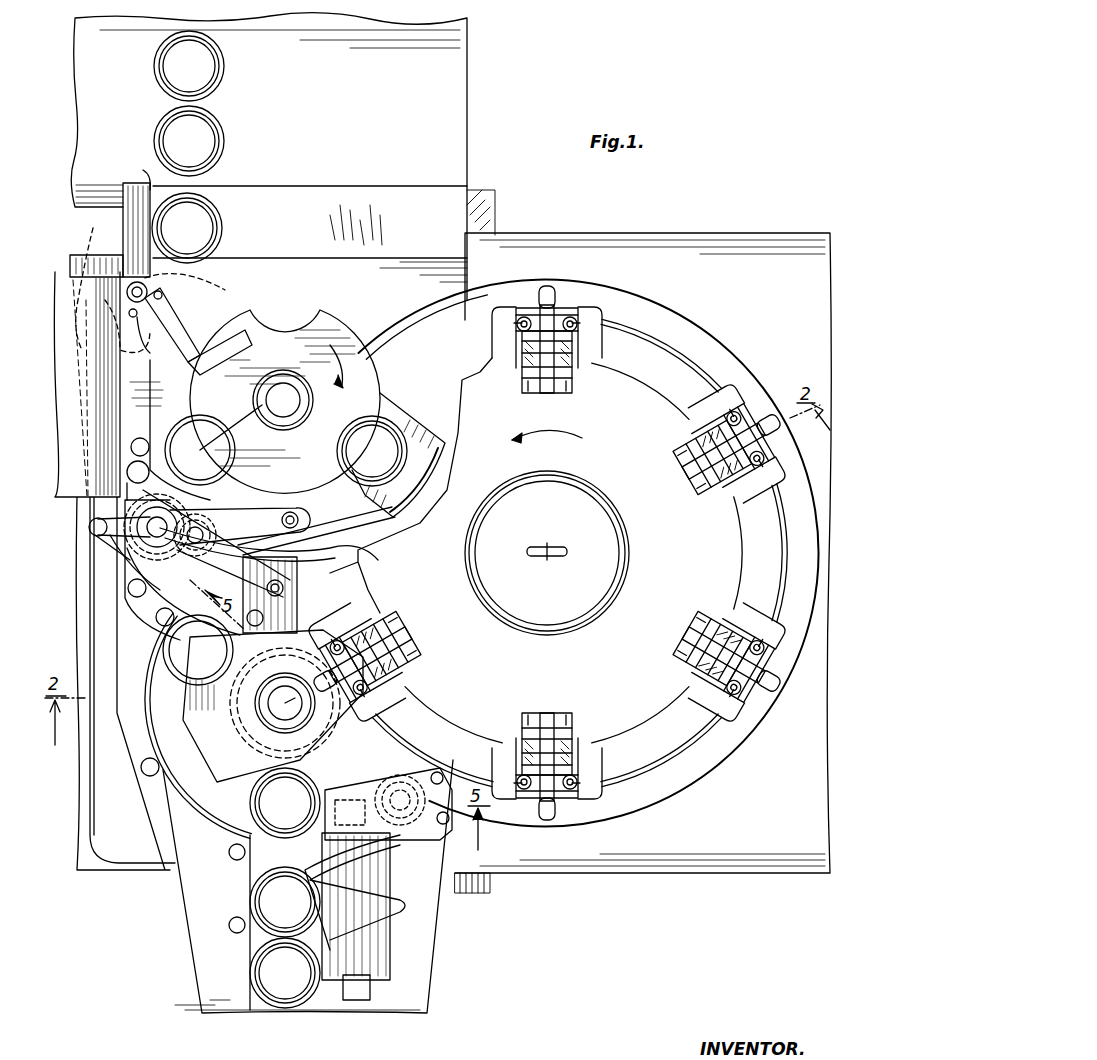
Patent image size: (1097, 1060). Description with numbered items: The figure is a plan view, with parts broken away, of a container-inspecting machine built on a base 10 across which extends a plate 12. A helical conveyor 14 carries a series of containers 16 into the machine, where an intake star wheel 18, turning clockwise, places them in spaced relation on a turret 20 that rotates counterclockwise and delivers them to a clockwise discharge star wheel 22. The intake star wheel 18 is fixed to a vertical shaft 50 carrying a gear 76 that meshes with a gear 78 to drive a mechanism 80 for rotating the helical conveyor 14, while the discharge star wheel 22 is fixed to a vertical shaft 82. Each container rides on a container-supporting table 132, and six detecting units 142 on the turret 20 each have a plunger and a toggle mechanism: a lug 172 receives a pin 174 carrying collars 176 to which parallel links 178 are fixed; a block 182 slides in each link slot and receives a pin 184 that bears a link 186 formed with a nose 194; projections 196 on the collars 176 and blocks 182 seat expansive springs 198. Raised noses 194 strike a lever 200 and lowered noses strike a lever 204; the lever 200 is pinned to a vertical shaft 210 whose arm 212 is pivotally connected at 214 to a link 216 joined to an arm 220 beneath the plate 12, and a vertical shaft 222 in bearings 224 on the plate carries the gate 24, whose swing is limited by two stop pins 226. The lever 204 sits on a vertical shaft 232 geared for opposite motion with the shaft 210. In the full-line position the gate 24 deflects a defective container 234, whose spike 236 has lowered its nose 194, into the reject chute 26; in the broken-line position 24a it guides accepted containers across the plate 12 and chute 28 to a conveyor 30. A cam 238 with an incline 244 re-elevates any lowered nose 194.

The base 10 is at (790, 860).
The plate 12 is at (452, 277).
The helical conveyor 14 is at (383, 960).
The containers 16 is at (282, 992).
The intake star wheel 18 is at (225, 757).
The turret 20 is at (640, 692).
The discharge star wheel 22 is at (340, 330).
The gate 24 is at (205, 348).
The gate position 24a is at (185, 410).
The reject chute 26 is at (114, 571).
The chute 28 is at (398, 200).
The conveyor 30 is at (455, 122).
The vertical shaft 50 is at (272, 710).
The gear 76 is at (257, 760).
The gear 78 is at (285, 815).
The mechanism 80 is at (444, 756).
The vertical shaft 82 is at (300, 405).
The container-supporting table 132 is at (398, 392).
The detecting units 142 is at (598, 387).
The lug 172 is at (420, 634).
The pin 174 is at (520, 745).
The collars or hubs 176 is at (410, 615).
The parallel links 178 is at (385, 602).
The block 182 is at (405, 682).
The pin 184 is at (395, 695).
The link 186 is at (312, 700).
The nose 194 is at (548, 290).
The projection 196 is at (550, 735).
The expansive springs 198 is at (575, 742).
The lever 200 is at (240, 540).
The lever 204 is at (215, 578).
The vertical shaft 210 is at (205, 502).
The arm 212 is at (110, 540).
The pivotal connection 214 is at (100, 530).
The link 216 is at (105, 522).
The arm 220 is at (118, 230).
The vertical shaft 222 is at (150, 292).
The bearings 224 is at (179, 313).
The stop pins 226 is at (178, 340).
The vertical shaft 232 is at (205, 555).
The container 234 is at (231, 420).
The spike 236 is at (200, 450).
The cam 238 is at (300, 572).
The incline 244 is at (225, 606).